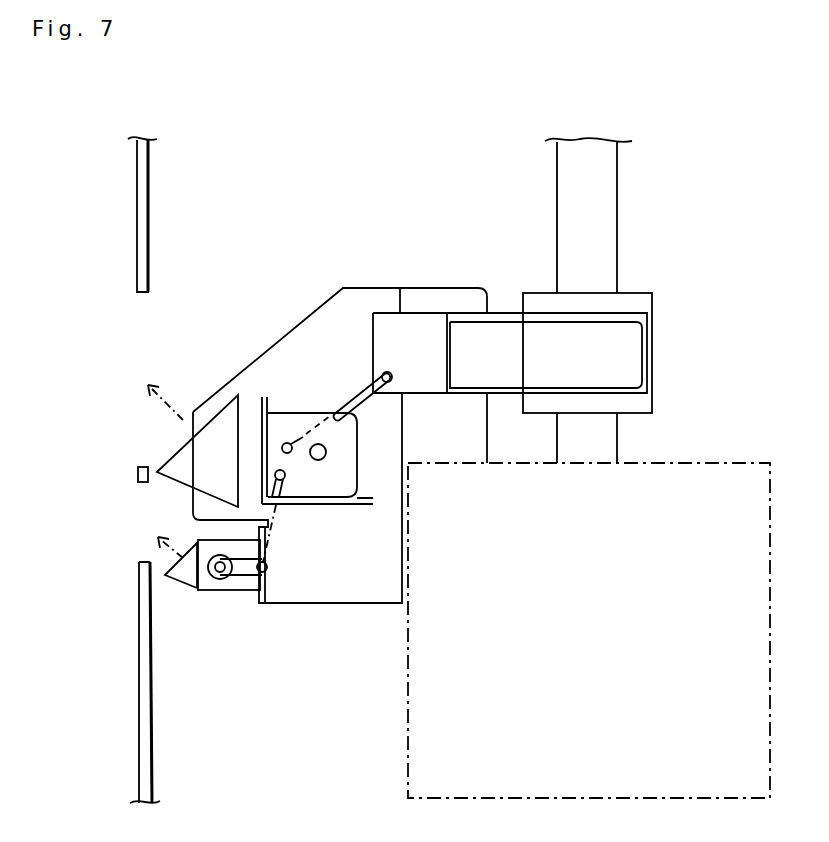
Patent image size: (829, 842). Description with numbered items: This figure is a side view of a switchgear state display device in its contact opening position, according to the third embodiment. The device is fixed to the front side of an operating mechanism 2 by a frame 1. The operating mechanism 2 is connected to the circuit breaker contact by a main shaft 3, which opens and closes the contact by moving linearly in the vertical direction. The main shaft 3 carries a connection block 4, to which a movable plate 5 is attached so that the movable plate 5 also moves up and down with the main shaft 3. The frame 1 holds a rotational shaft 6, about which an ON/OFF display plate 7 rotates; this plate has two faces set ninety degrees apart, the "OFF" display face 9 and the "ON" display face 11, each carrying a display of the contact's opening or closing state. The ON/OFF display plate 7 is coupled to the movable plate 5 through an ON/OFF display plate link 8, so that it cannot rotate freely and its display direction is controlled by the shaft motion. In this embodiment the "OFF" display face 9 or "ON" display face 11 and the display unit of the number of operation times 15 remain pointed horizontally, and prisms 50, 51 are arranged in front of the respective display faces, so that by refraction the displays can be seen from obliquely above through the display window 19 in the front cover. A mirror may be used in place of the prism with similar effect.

The frame 1 is at (312, 327).
The operating mechanism 2 is at (730, 462).
The main shaft 3 is at (600, 220).
The connection block 4 is at (642, 303).
The movable plate 5 is at (617, 357).
The rotational shaft 6 is at (330, 452).
The ON/OFF display plate 7 is at (295, 418).
The ON/OFF display plate link 8 is at (353, 395).
The "OFF" display face 9 is at (258, 438).
The "ON" display face 11 is at (323, 508).
The display unit of the number of operation times 15 is at (193, 582).
The display window 19 is at (140, 347).
The prism 50 is at (187, 457).
The prism 51 is at (175, 582).